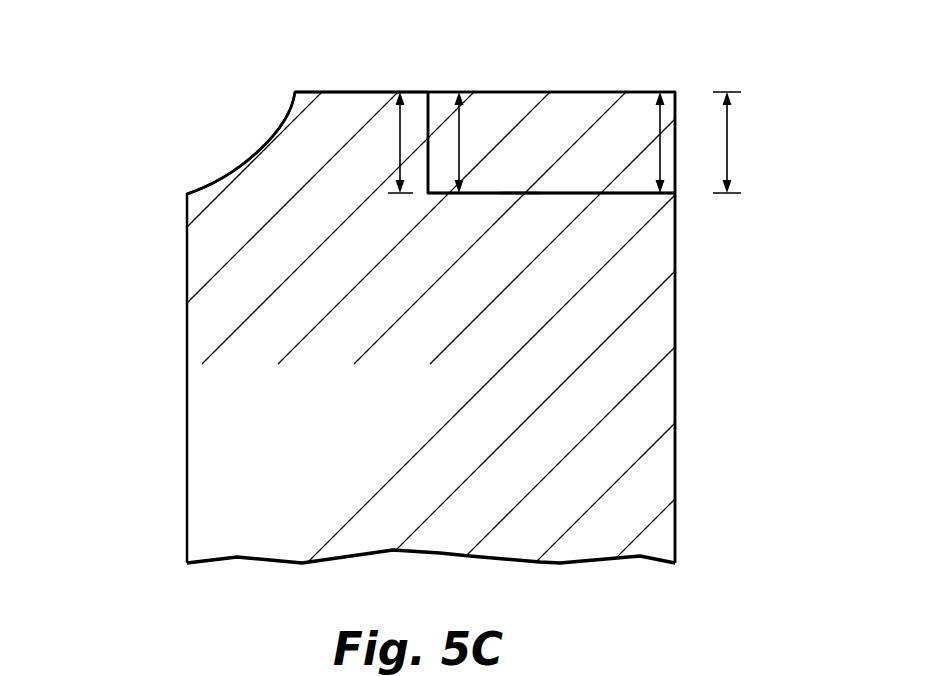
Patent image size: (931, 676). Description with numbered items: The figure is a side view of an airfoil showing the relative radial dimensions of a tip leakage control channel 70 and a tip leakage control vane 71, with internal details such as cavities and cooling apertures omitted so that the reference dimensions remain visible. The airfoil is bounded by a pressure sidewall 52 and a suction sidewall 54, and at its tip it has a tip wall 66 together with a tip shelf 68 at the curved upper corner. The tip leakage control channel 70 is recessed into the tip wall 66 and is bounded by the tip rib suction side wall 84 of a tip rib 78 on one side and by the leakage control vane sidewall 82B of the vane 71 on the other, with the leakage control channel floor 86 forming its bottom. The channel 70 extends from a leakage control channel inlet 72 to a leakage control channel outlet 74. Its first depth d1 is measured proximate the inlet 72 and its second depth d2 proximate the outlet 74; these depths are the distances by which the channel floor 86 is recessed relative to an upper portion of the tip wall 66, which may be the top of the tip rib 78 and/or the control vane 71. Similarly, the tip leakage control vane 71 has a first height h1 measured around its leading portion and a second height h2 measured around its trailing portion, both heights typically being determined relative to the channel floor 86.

The pressure sidewall 52 is at (145, 375).
The suction sidewall 54 is at (702, 407).
The tip wall 66 is at (795, 92).
The tip shelf 68 is at (203, 159).
The tip leakage control channel 70 is at (567, 182).
The tip leakage control vane 71 is at (588, 92).
The leakage control channel inlet 72 is at (483, 190).
The leakage control channel outlet 74 is at (620, 182).
The tip rib 78 is at (326, 137).
The leakage control vane sidewall 82B is at (532, 130).
The tip rib suction side wall 84 is at (431, 120).
The leakage control channel floor 86 is at (545, 193).
The first depth d1 is at (400, 142).
The second depth d2 is at (728, 140).
The first height h1 is at (462, 138).
The second height h2 is at (657, 138).